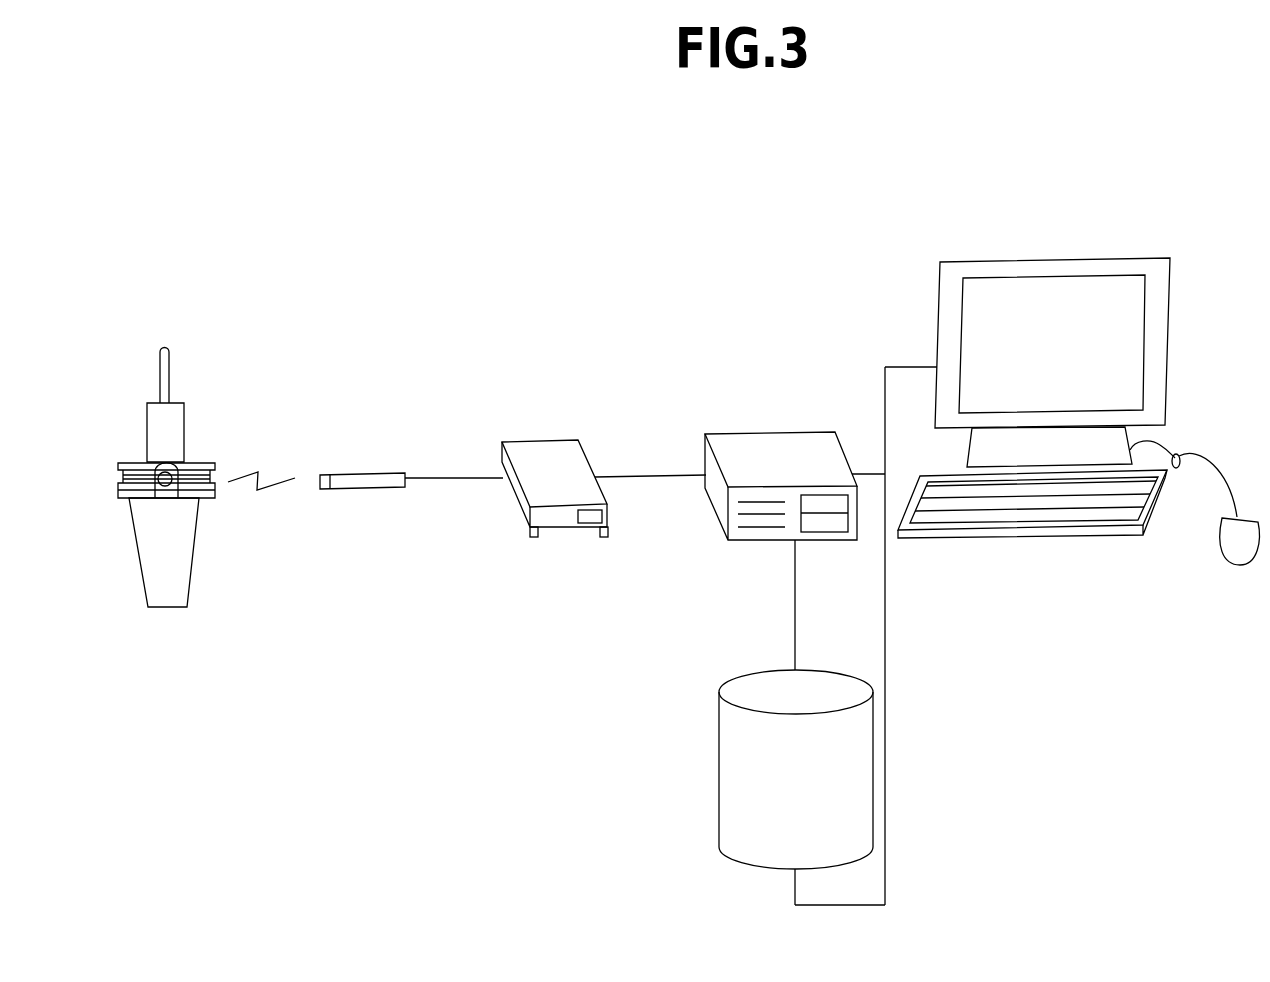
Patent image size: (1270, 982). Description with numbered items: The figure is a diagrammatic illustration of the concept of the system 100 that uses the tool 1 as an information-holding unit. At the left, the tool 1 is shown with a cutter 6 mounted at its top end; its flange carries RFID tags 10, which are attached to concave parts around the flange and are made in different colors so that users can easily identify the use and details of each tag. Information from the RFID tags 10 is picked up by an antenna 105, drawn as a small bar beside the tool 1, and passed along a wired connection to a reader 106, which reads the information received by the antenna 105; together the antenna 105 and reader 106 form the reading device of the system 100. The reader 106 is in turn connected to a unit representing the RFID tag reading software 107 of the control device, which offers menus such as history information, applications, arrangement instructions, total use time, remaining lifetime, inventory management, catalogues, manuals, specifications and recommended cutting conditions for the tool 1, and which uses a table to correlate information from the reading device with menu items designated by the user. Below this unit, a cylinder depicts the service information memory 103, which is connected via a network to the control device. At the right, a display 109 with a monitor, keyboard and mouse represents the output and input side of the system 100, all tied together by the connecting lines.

The system 100 is at (786, 207).
The cutter 6 is at (170, 364).
The tool 1 is at (155, 538).
The RFID tag 10 is at (165, 480).
The antenna 105 is at (363, 476).
The reader 106 is at (550, 460).
The RFID tag reading software 107 is at (757, 448).
The service information memory 103 is at (742, 787).
The display 109 is at (1157, 322).